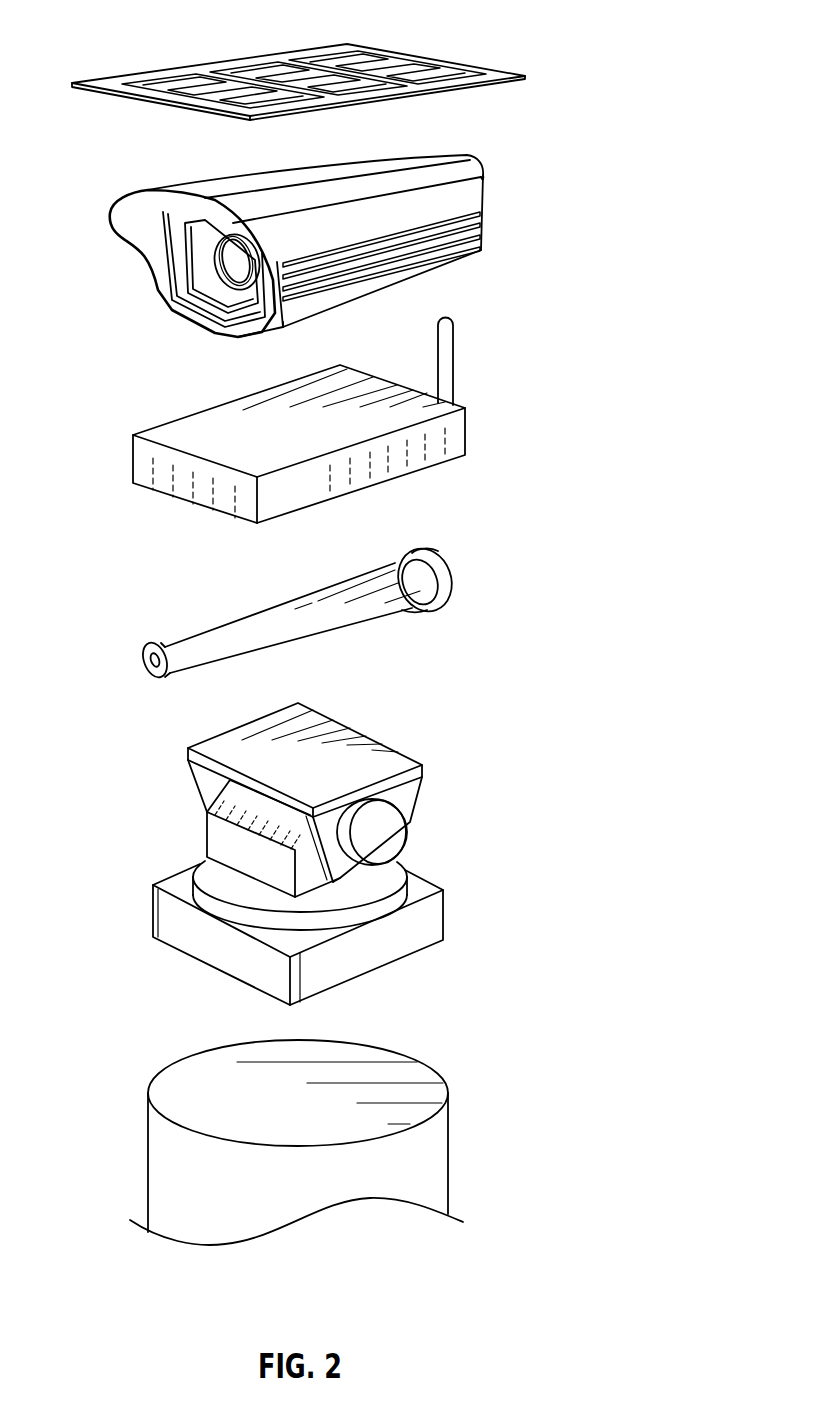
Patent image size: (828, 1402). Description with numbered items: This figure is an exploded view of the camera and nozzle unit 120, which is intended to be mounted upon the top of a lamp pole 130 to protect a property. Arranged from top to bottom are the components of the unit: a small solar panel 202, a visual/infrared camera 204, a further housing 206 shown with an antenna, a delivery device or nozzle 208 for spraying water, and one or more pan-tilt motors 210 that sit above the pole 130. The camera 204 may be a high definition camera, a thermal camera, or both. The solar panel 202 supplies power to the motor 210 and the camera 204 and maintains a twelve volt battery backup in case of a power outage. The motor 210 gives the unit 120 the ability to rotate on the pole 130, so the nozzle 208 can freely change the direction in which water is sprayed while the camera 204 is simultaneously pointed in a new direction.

The camera and nozzle unit 120 is at (492, 38).
The solar panel 202 is at (540, 77).
The camera 204 is at (500, 237).
The wireless router 206 is at (483, 443).
The delivery device 208 is at (470, 583).
The pan-tilt motor 210 is at (425, 868).
The pole 130 is at (424, 1052).